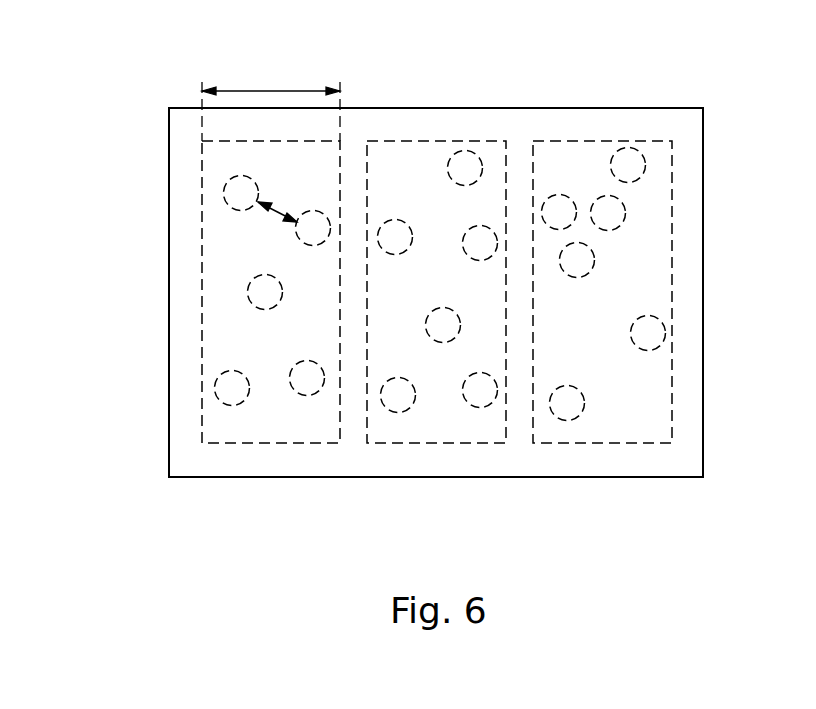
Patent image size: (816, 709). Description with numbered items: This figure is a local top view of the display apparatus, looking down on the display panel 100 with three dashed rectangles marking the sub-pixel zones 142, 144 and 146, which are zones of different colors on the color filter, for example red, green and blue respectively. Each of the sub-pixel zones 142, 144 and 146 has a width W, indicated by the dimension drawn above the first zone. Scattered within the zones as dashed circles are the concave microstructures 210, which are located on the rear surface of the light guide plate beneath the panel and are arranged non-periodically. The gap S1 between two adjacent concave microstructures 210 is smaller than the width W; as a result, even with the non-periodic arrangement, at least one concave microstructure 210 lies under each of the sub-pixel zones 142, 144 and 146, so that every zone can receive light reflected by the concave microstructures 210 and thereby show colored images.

The display panel 100 is at (203, 460).
The sub-pixel zone 142 is at (272, 428).
The sub-pixel zone 144 is at (437, 428).
The sub-pixel zone 146 is at (602, 428).
The concave microstructure 210 is at (226, 200).
The gap S1 is at (277, 207).
The width W is at (271, 100).